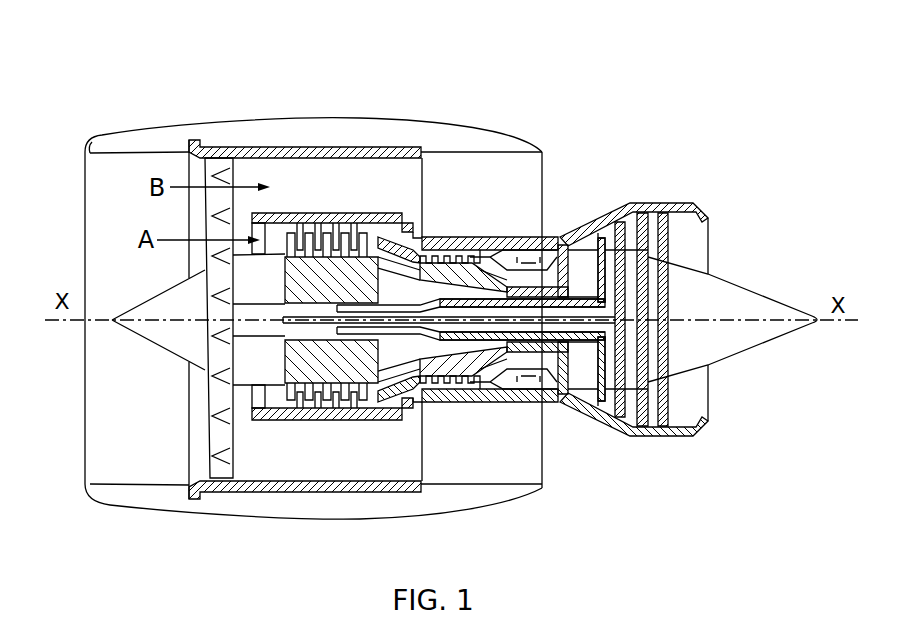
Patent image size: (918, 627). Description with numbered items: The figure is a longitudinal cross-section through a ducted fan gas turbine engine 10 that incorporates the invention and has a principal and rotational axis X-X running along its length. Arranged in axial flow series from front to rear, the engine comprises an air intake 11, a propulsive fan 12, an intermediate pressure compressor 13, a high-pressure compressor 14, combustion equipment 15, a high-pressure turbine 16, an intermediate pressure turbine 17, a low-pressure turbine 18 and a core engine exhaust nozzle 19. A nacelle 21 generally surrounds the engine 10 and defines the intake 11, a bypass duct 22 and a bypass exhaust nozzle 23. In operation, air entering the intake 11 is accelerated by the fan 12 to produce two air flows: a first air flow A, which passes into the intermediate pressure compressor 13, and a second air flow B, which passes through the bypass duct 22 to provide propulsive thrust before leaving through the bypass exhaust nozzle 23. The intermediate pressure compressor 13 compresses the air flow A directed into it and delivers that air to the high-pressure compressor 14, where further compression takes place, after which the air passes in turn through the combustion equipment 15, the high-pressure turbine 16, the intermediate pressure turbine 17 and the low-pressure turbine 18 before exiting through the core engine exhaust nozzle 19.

The ducted fan gas turbine engine 10 is at (131, 93).
The air intake 11 is at (133, 153).
The propulsive fan 12 is at (210, 442).
The intermediate pressure compressor 13 is at (348, 404).
The high-pressure compressor 14 is at (462, 257).
The combustion equipment 15 is at (510, 380).
The high-pressure turbine 16 is at (560, 393).
The intermediate pressure turbine 17 is at (603, 233).
The low-pressure turbine 18 is at (611, 418).
The core engine exhaust nozzle 19 is at (700, 208).
The nacelle 21 is at (350, 133).
The bypass duct 22 is at (469, 191).
The bypass exhaust nozzle 23 is at (543, 150).